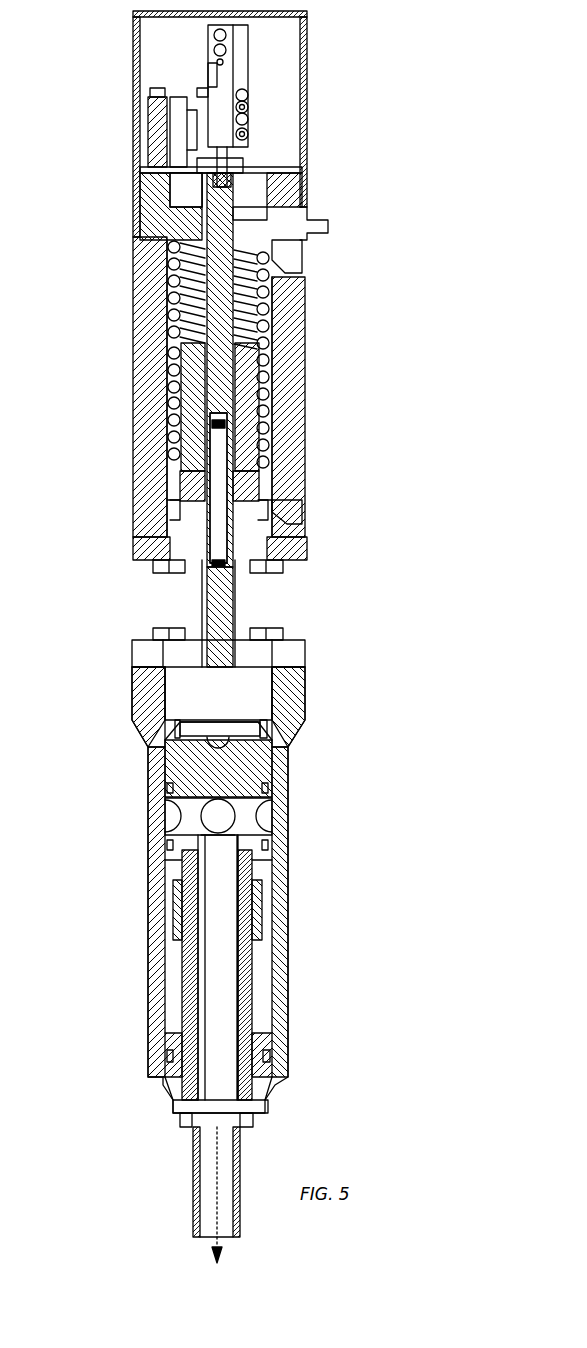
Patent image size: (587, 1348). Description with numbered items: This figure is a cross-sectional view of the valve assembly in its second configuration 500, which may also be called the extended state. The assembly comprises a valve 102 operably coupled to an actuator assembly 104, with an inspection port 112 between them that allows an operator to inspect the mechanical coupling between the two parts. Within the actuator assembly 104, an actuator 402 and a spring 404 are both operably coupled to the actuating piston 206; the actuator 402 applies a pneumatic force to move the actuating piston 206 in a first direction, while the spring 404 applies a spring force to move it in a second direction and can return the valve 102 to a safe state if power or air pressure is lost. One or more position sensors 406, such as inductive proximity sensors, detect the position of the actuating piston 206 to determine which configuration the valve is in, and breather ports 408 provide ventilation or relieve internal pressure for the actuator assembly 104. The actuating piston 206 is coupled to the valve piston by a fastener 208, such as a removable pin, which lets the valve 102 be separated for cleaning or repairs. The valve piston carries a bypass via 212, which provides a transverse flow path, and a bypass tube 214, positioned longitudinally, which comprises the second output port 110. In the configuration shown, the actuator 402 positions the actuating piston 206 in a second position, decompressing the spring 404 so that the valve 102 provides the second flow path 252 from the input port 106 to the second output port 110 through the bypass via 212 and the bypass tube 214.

The second configuration 500 is at (383, 150).
The actuator assembly 104 is at (100, 11).
The valve 102 is at (112, 1265).
The inspection port 112 is at (125, 568).
The actuator 402 is at (240, 68).
The position sensors 406 is at (150, 103).
The spring 404 is at (257, 300).
The breather ports 408 is at (292, 253).
The actuating piston 206 is at (218, 598).
The fastener 208 is at (253, 722).
The input port 106 is at (290, 800).
The bypass via 212 is at (180, 812).
The second flow path 252 is at (220, 818).
The bypass tube 214 is at (225, 1152).
The second output port 110 is at (222, 1240).